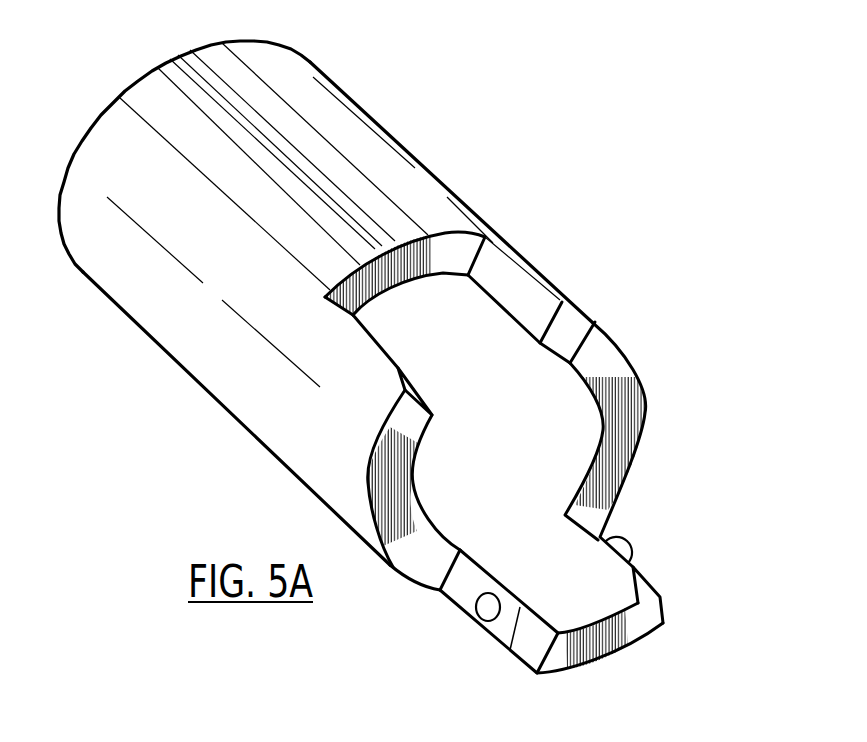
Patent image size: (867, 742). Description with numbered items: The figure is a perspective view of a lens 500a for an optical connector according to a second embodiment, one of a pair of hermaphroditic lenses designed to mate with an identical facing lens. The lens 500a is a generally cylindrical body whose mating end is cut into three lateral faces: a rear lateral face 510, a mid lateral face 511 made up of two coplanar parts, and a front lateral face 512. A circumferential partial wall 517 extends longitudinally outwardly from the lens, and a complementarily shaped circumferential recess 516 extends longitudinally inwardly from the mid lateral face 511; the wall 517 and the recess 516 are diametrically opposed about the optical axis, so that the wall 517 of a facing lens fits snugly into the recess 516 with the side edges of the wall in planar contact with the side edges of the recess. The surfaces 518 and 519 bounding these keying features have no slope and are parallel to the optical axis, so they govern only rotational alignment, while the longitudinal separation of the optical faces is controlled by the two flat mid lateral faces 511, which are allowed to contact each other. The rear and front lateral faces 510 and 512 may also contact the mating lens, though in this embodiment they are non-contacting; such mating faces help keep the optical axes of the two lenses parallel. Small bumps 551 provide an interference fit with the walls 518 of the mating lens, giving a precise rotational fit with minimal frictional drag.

The lens 500a is at (248, 377).
The rear lateral face 510 is at (452, 300).
The mid lateral face 511 is at (387, 500).
The front lateral face 512 is at (635, 635).
The circumferential recess 516 is at (497, 258).
The circumferential partial wall 517 is at (568, 605).
The surfaces 518 is at (382, 342).
The surfaces 519 is at (458, 597).
The bumps 551 is at (478, 615).